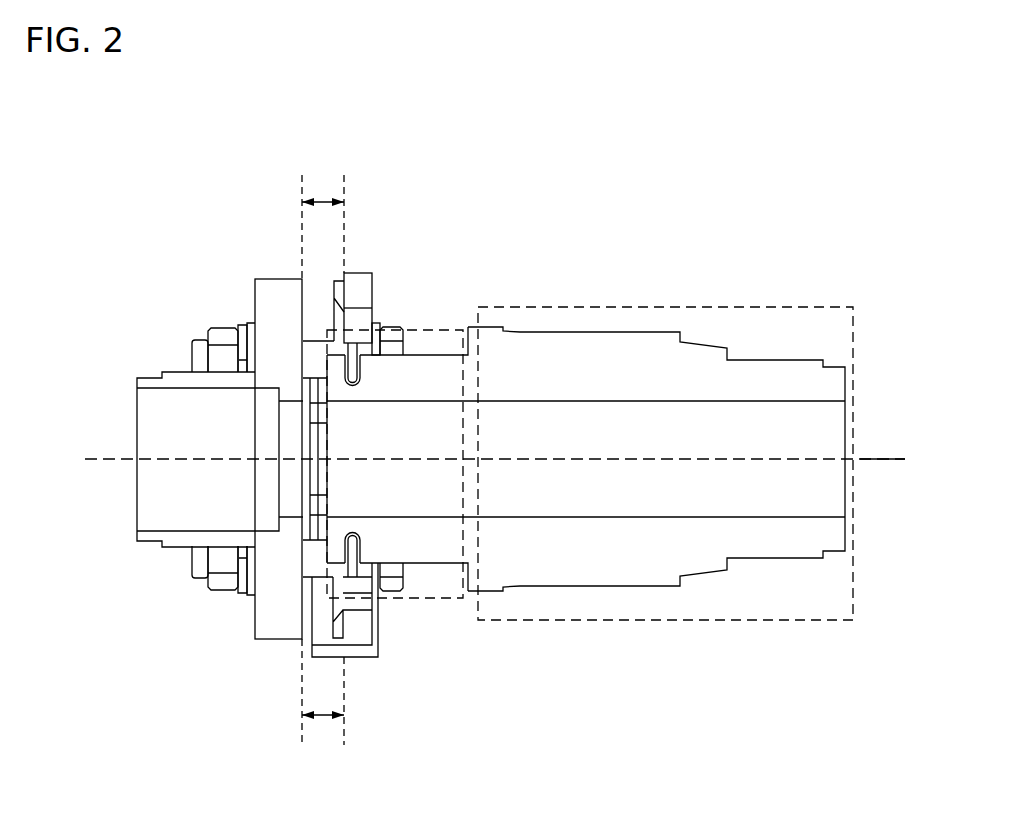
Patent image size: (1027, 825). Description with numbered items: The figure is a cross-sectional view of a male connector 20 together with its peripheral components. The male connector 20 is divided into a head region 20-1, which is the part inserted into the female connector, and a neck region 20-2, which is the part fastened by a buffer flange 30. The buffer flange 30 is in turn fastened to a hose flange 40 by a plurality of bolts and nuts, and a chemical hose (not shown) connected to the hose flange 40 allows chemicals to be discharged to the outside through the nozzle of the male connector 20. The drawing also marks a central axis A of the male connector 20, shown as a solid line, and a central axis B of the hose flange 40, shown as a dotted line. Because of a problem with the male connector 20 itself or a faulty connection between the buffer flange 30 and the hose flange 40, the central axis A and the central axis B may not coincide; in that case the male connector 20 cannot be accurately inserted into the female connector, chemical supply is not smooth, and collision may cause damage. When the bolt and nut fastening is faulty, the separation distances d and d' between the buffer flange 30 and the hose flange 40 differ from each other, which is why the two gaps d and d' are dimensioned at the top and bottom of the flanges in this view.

The male connector 20 is at (590, 423).
The head region 20-1 is at (688, 618).
The neck region 20-2 is at (413, 600).
The buffer flange 30 is at (365, 284).
The hose flange 40 is at (272, 279).
The central axis of the male connector A is at (877, 461).
The central axis of the hose flange B is at (98, 459).
The separation distance d is at (323, 216).
The separation distance d' is at (323, 696).